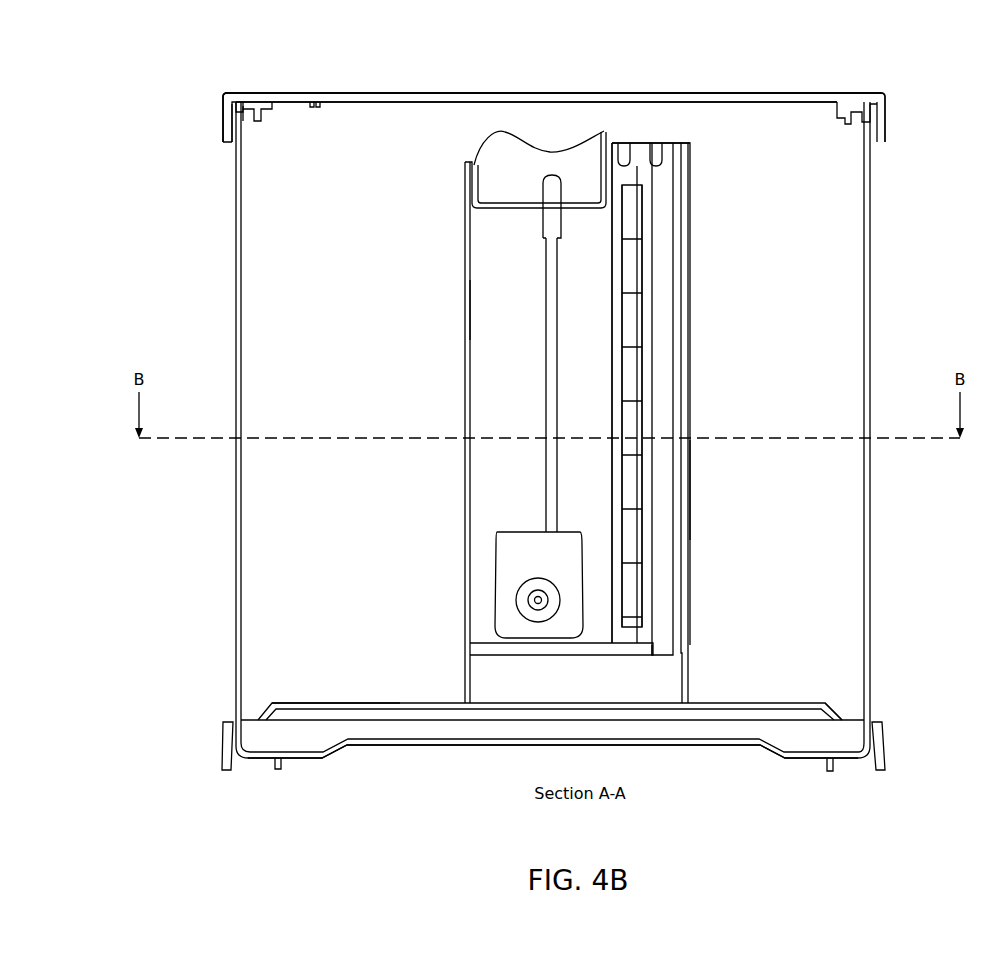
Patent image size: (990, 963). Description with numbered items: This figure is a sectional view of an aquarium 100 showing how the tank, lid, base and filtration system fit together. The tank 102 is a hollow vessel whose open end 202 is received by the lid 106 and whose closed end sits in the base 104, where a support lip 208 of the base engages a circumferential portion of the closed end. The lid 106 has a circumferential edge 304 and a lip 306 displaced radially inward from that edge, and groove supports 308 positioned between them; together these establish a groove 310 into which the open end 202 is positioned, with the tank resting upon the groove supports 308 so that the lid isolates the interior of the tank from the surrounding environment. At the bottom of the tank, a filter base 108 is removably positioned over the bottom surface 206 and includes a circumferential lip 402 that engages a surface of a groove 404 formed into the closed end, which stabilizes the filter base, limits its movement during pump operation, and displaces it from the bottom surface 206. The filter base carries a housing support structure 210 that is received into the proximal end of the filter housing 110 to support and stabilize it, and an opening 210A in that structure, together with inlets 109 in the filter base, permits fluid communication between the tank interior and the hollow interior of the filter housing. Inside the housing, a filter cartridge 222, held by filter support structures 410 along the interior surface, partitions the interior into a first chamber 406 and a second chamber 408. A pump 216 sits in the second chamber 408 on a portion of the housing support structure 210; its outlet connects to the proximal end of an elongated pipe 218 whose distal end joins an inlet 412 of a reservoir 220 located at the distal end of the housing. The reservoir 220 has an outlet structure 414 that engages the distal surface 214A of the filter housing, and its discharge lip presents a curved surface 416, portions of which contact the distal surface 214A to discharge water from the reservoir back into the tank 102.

The aquarium 100 is at (862, 70).
The tank 102 is at (242, 308).
The base 104 is at (221, 750).
The lid 106 is at (522, 92).
The filter base 108 is at (758, 703).
The inlets 109 is at (323, 683).
The filter housing 110 is at (696, 486).
The open end 202 is at (878, 165).
The bottom surface 206 is at (470, 740).
The support lip 208 is at (275, 763).
The housing support structure 210 is at (695, 682).
The opening 210A is at (663, 645).
The distal surface 214A is at (464, 250).
The pump 216 is at (503, 592).
The elongated pipe 218 is at (547, 375).
The reservoir 220 is at (610, 138).
The filter cartridge 222 is at (630, 242).
The circumferential edge 304 is at (226, 150).
The lip 306 is at (263, 118).
The groove supports 308 is at (242, 106).
The groove 310 is at (250, 128).
The circumferential lip 402 is at (840, 717).
The groove 404 is at (813, 755).
The first chamber 406 is at (668, 345).
The second chamber 408 is at (500, 308).
The filter support structures 410 is at (632, 308).
The inlet 412 is at (548, 188).
The outlet structure 414 is at (470, 178).
The curved surface 416 is at (473, 136).